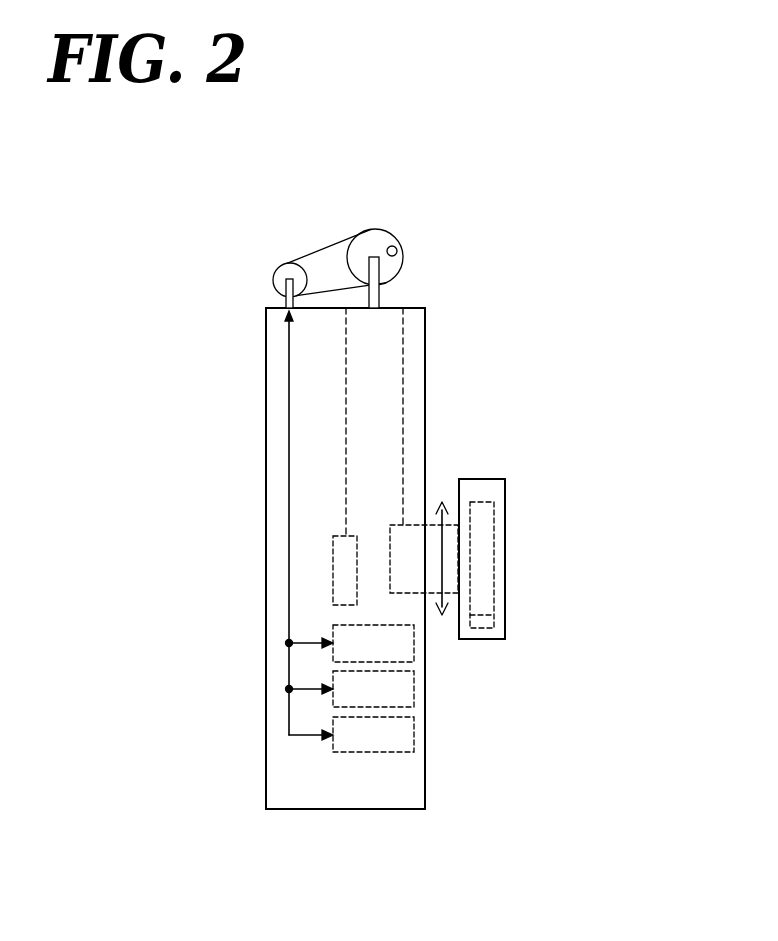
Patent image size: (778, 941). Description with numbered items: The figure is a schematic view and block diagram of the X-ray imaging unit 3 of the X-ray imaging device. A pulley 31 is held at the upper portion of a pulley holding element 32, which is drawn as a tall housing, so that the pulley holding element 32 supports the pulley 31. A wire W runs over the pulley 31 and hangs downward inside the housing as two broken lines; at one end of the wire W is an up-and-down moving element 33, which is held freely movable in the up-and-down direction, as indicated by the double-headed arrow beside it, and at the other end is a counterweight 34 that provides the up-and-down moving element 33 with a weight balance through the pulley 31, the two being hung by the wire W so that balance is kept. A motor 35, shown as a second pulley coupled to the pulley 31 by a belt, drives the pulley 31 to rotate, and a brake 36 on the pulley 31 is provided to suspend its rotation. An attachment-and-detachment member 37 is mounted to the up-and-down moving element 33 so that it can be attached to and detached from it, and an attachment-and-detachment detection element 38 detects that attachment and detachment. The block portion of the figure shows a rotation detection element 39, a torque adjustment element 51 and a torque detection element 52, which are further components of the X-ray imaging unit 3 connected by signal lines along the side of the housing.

The X-ray imaging unit 3 is at (441, 304).
The pulley 31 is at (383, 245).
The pulley holding element 32 is at (276, 405).
The up-and-down moving element 33 is at (483, 485).
The counterweight 34 is at (350, 558).
The motor 35 is at (277, 283).
The brake 36 is at (398, 249).
The attachment-and-detachment member 37 is at (486, 545).
The attachment-and-detachment detection element 38 is at (486, 617).
The rotation detection element 39 is at (405, 640).
The torque adjustment element 51 is at (405, 686).
The torque detection element 52 is at (405, 732).
The wire W is at (405, 287).